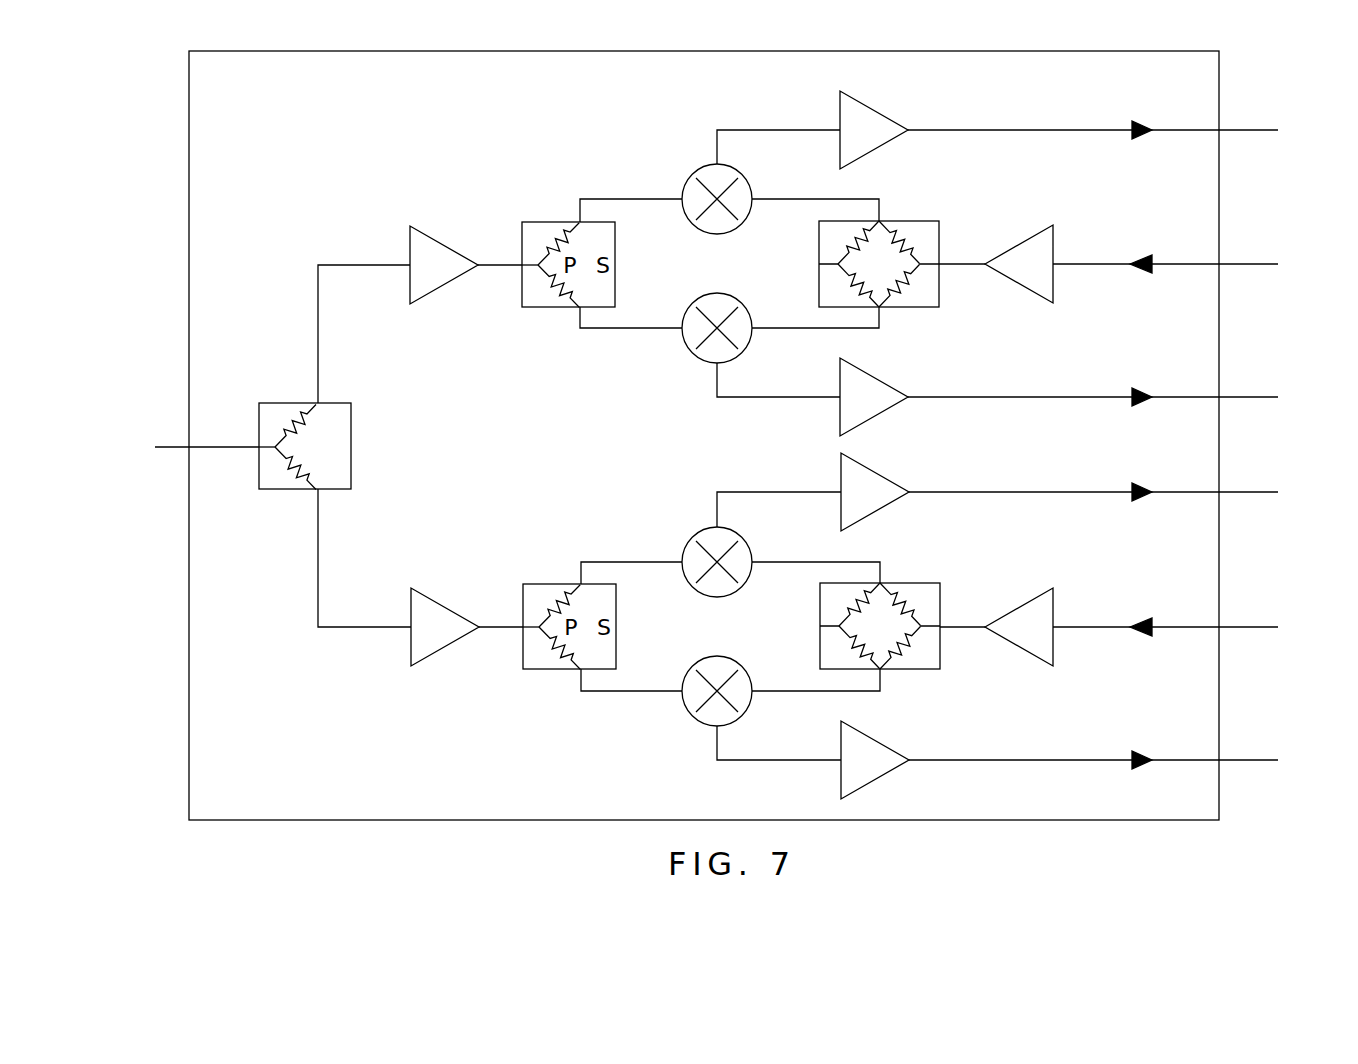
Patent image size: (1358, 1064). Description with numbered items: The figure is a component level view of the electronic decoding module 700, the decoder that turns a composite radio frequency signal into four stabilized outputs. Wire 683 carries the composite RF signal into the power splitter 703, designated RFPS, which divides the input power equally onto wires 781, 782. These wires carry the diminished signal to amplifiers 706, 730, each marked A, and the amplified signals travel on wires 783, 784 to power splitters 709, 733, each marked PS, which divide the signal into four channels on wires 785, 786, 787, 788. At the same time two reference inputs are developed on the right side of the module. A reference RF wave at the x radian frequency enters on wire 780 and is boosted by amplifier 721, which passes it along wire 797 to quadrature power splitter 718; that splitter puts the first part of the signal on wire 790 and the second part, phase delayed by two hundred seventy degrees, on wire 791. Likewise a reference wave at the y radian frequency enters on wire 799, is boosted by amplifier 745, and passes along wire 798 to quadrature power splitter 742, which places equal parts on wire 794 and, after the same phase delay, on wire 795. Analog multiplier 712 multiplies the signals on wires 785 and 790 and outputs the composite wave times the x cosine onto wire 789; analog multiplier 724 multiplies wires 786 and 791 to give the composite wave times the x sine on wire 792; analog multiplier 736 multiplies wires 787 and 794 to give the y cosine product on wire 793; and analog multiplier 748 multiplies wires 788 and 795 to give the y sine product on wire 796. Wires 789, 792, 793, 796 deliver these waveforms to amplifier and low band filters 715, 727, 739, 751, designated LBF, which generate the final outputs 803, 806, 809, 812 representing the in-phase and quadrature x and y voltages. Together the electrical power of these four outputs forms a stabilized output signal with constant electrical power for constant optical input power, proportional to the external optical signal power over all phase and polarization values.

The wire 683 is at (166, 447).
The electronic decoding module 700 is at (189, 229).
The power splitter 703 is at (272, 490).
The amplifier 706 is at (410, 247).
The power splitter 709 is at (548, 222).
The analog multiplier 712 is at (700, 170).
The amplifier and low band filter 715 is at (877, 110).
The quadrature power splitter 718 is at (915, 307).
The amplifier 721 is at (1053, 280).
The analog multiplier 724 is at (683, 345).
The amplifier and low band filter 727 is at (877, 380).
The amplifier 730 is at (425, 658).
The power splitter 733 is at (542, 670).
The analog multiplier 736 is at (692, 533).
The amplifier and low band filter 739 is at (877, 475).
The quadrature power splitter 742 is at (941, 665).
The amplifier 745 is at (1053, 648).
The analog multiplier 748 is at (690, 710).
The amplifier and low band filter 751 is at (880, 777).
The wire 780 is at (1246, 263).
The wire 781 is at (318, 350).
The wire 782 is at (332, 627).
The wire 783 is at (497, 264).
The wire 784 is at (500, 627).
The wire 785 is at (640, 199).
The wire 786 is at (580, 322).
The wire 787 is at (600, 562).
The wire 788 is at (602, 691).
The wire 789 is at (778, 130).
The wire 790 is at (872, 198).
The wire 791 is at (773, 328).
The wire 792 is at (713, 398).
The wire 793 is at (778, 492).
The wire 794 is at (865, 563).
The wire 795 is at (870, 692).
The wire 796 is at (738, 760).
The wire 797 is at (960, 263).
The wire 798 is at (967, 627).
The wire 799 is at (1246, 627).
The final output 803 is at (1246, 130).
The final output 806 is at (1246, 397).
The final output 809 is at (1246, 492).
The final output 812 is at (1246, 760).